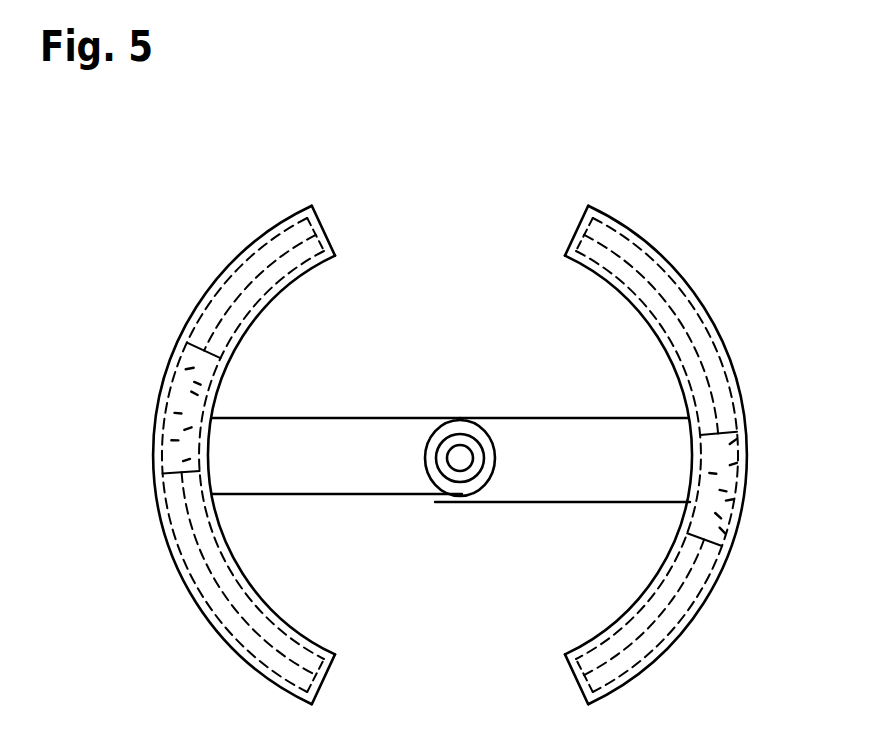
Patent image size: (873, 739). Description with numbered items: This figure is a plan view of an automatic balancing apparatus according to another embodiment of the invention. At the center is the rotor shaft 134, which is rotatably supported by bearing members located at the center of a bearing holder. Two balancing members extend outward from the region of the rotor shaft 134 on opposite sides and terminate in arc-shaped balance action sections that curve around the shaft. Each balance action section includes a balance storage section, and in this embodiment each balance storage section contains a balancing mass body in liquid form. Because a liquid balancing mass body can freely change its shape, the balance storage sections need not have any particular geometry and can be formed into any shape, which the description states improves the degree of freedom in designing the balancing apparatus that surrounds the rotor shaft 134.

The rotor shaft 134 is at (462, 440).